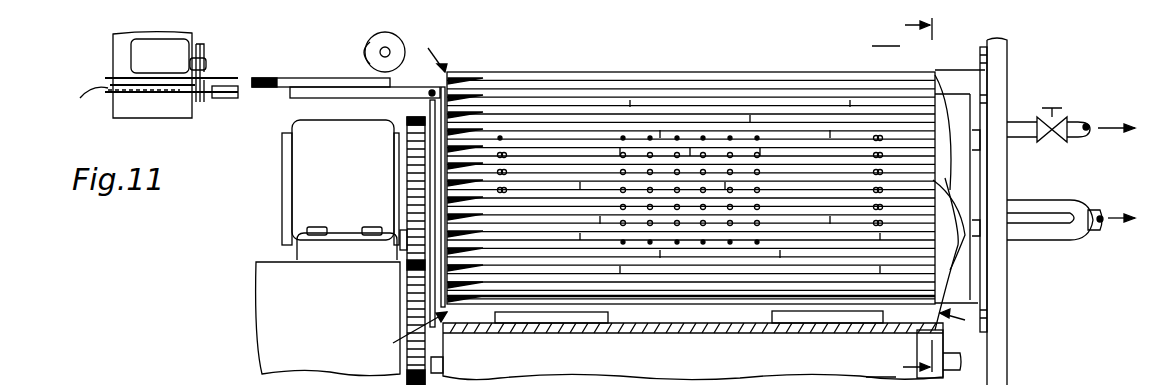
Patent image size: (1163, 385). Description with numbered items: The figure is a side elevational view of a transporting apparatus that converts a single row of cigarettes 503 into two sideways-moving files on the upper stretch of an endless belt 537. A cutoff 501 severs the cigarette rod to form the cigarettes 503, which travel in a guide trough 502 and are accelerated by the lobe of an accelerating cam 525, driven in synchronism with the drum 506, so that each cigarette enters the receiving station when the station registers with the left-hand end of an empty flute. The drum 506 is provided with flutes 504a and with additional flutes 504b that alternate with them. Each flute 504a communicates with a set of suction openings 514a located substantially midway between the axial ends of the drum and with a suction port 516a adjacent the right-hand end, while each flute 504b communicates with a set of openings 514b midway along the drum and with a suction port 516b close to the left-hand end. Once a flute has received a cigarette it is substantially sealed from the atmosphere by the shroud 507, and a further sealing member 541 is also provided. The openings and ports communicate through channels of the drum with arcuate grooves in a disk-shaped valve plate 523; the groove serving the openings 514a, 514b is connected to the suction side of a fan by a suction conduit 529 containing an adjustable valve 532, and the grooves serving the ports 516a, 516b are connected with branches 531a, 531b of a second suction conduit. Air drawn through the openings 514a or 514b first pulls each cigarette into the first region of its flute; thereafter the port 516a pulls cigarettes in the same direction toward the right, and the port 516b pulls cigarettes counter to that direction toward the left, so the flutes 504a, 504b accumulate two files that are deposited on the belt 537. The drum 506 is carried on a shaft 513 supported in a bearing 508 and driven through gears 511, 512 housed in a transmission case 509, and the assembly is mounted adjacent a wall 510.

The cutoff 501 is at (145, 54).
The guide trough 502 is at (224, 96).
The cigarettes 503 is at (207, 64).
The flutes 504a is at (950, 95).
The additional flutes 504b is at (945, 330).
The drum 506 is at (397, 337).
The shroud 507 is at (476, 75).
The bearing 508 is at (300, 148).
The transmission case 509 is at (262, 272).
The wall 510 is at (998, 310).
The gear 511 is at (410, 122).
The gear 512 is at (412, 290).
The shaft 513 is at (428, 188).
The suction openings 514a is at (757, 155).
The suction openings 514b is at (677, 172).
The suction port 516a is at (878, 223).
The suction port 516b is at (503, 190).
The valve plate 523 is at (960, 260).
The accelerating cam 525 is at (368, 48).
The suction conduit 529 is at (1018, 128).
The branch of second suction conduit 531a is at (1048, 232).
The branch of second suction conduit 531b is at (1030, 205).
The adjustable valve 532 is at (1068, 126).
The endless belt 537 is at (452, 334).
The sealing member 541 is at (453, 72).